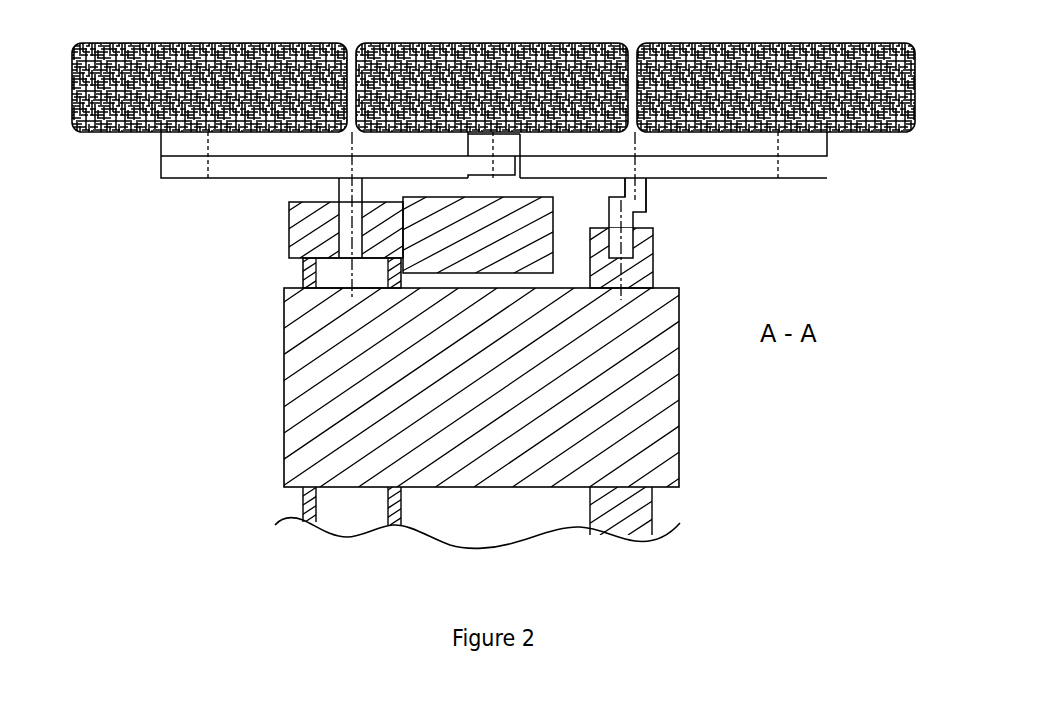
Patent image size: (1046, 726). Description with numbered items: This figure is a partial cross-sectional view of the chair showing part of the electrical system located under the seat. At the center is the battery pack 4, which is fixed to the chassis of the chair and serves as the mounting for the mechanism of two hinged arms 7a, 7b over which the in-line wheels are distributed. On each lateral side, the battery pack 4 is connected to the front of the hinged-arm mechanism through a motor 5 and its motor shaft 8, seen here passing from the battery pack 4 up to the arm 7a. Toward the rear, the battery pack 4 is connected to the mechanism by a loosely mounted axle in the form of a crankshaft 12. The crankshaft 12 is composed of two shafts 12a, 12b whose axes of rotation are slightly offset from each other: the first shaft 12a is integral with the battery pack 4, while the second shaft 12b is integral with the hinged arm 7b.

The battery pack 4 is at (538, 377).
The motor 5 is at (306, 228).
The motor shaft 8 is at (333, 233).
The hinged arm 7a is at (183, 165).
The hinged arm 7b is at (817, 167).
The crankshaft 12 is at (663, 215).
The first shaft 12a is at (630, 249).
The second shaft 12b is at (655, 193).